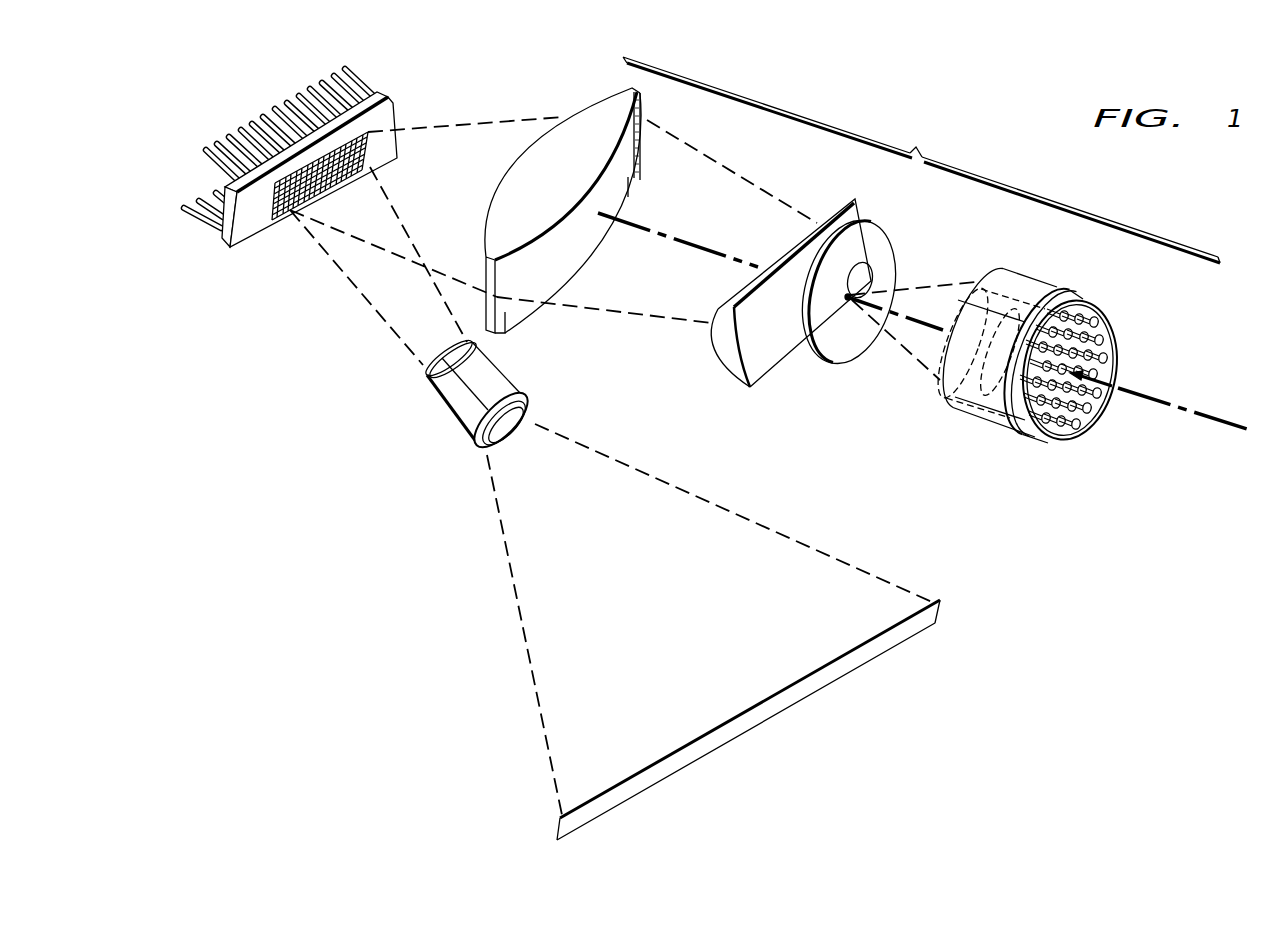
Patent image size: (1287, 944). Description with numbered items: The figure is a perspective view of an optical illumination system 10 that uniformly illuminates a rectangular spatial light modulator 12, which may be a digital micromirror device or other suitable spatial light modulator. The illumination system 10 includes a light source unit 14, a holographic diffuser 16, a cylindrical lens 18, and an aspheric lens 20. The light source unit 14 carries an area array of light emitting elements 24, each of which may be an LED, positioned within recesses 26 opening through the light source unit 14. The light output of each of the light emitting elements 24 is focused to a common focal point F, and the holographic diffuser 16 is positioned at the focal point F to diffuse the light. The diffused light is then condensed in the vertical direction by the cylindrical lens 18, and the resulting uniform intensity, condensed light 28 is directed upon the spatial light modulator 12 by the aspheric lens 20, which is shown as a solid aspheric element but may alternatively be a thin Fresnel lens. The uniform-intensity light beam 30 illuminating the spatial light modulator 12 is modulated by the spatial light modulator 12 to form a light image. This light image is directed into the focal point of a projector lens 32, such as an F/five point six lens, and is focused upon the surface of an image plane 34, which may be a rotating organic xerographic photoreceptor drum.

The optical illumination system 10 is at (916, 148).
The spatial light modulator 12 is at (247, 230).
The light source unit 14 is at (1145, 324).
The holographic diffuser 16 is at (837, 353).
The cylindrical lens 18 is at (732, 378).
The aspheric lens 20 is at (593, 100).
The light emitting elements 24 is at (1109, 358).
The recesses 26 is at (963, 283).
The condensed light 28 is at (757, 187).
The uniform-intensity light beam 30 is at (477, 128).
The projector lens 32 is at (440, 415).
The image plane 34 is at (640, 790).
The focal point F is at (857, 267).